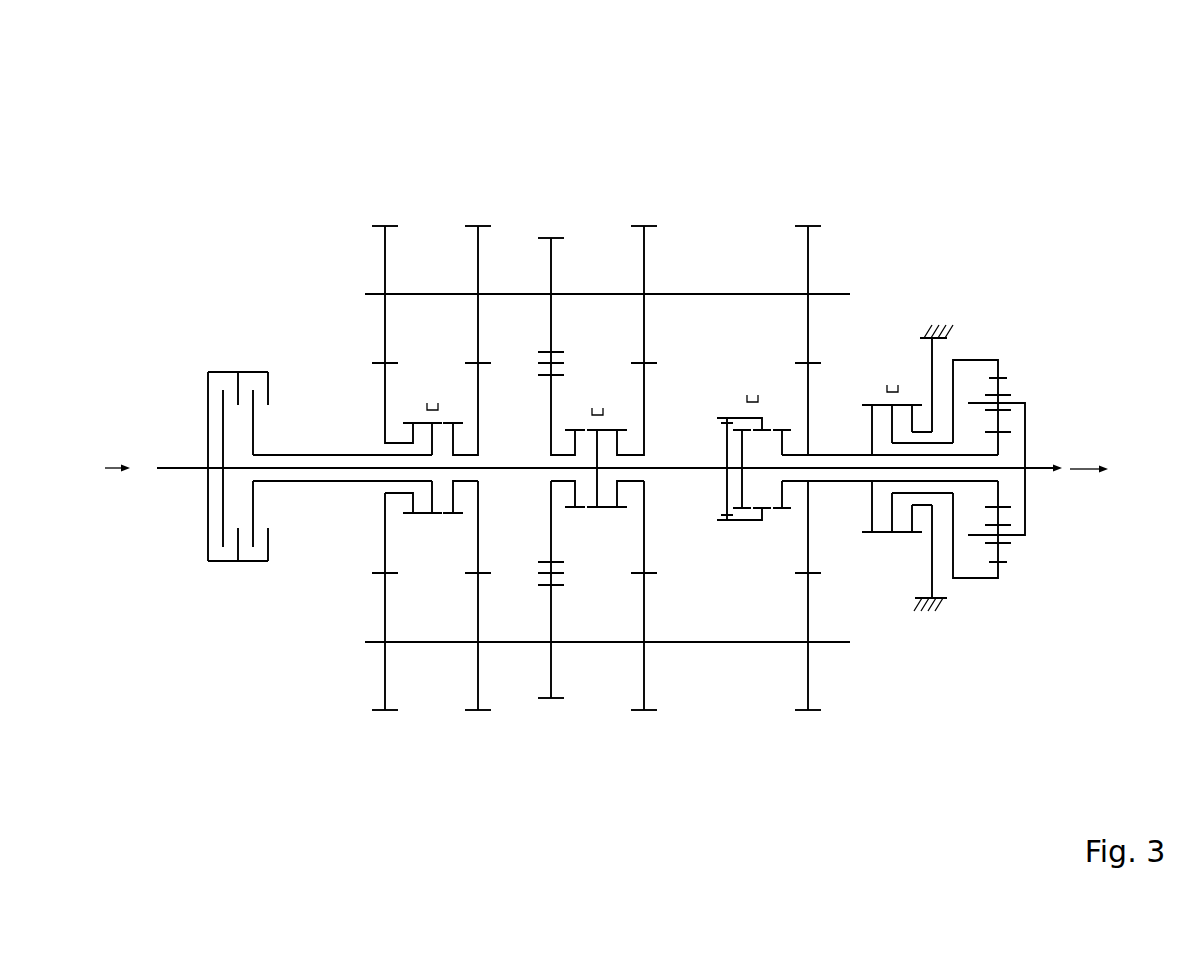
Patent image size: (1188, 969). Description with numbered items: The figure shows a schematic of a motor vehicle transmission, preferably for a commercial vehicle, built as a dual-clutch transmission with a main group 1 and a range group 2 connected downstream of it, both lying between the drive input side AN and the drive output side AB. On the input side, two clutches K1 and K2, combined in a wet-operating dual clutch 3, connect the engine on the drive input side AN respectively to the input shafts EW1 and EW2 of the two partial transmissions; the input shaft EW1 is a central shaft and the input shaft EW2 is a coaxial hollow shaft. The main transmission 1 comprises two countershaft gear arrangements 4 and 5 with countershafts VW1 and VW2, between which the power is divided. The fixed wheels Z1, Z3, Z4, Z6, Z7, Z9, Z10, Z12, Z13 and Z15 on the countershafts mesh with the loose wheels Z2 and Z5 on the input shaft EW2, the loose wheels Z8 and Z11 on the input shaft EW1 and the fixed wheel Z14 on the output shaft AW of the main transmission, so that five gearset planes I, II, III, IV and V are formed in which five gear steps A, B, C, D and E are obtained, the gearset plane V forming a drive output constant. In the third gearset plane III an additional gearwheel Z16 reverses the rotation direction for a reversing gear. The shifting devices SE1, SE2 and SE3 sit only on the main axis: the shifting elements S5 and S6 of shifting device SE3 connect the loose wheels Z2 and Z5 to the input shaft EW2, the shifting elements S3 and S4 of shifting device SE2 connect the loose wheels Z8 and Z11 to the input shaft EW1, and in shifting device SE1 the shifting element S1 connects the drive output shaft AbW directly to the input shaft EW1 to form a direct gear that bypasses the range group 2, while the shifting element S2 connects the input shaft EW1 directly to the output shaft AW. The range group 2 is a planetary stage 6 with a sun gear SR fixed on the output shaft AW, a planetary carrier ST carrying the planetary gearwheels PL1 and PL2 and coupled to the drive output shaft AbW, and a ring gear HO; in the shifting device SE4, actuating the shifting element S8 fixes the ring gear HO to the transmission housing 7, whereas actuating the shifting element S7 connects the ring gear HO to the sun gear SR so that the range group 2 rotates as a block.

The main group 1 is at (711, 122).
The range group 2 is at (998, 176).
The dual clutch 3 is at (242, 610).
The countershaft gear arrangement 4 is at (725, 176).
The countershaft gear arrangement 5 is at (719, 752).
The planetary stage 6 is at (996, 620).
The housing 7 is at (940, 330).
The powershift element K1 is at (216, 356).
The powershift element K2 is at (247, 356).
The input shaft EW1 is at (313, 481).
The input shaft EW2 is at (298, 454).
The countershaft VW1 is at (838, 293).
The countershaft VW2 is at (823, 645).
The output shaft AW is at (812, 535).
The drive output shaft AbW is at (1007, 470).
The drive input side AN is at (118, 455).
The drive output side AB is at (1089, 458).
The fixed wheel Z1 is at (386, 267).
The loose wheel Z2 is at (385, 400).
The fixed wheel Z3 is at (385, 672).
The fixed wheel Z4 is at (478, 278).
The loose wheel Z5 is at (478, 545).
The fixed wheel Z6 is at (478, 672).
The fixed wheel Z7 is at (551, 268).
The loose wheel Z8 is at (551, 525).
The fixed wheel Z9 is at (551, 670).
The fixed wheel Z10 is at (645, 258).
The loose wheel Z11 is at (644, 540).
The fixed wheel Z12 is at (644, 677).
The fixed wheel Z13 is at (809, 262).
The fixed wheel Z14 is at (850, 483).
The fixed wheel Z15 is at (808, 677).
The additional gearwheel Z16 is at (553, 373).
The shifting device SE1 is at (762, 367).
The shifting device SE2 is at (598, 381).
The shifting device SE3 is at (431, 376).
The fourth shift element SE4 is at (893, 364).
The shifting element S1 is at (744, 455).
The shifting element S2 is at (762, 449).
The shifting element S3 is at (587, 435).
The shifting element S4 is at (607, 455).
The shifting element S5 is at (422, 426).
The shifting element S6 is at (442, 455).
The shifting element S7 is at (872, 456).
The shifting element S8 is at (917, 456).
The ring gear HO is at (970, 360).
The sun gear SR is at (1008, 443).
The planetary gearwheel PL1 is at (1008, 382).
The planetary gearwheel PL2 is at (1003, 553).
The planetary carrier ST is at (1027, 528).
The gearset plane I is at (385, 214).
The gearset plane II is at (478, 214).
The gearset plane III is at (551, 225).
The gearset plane IV is at (644, 214).
The gearset plane V is at (808, 214).
The gear step A is at (385, 720).
The gear step B is at (478, 720).
The gear step C is at (551, 709).
The gear step D is at (644, 720).
The gear step E is at (808, 720).